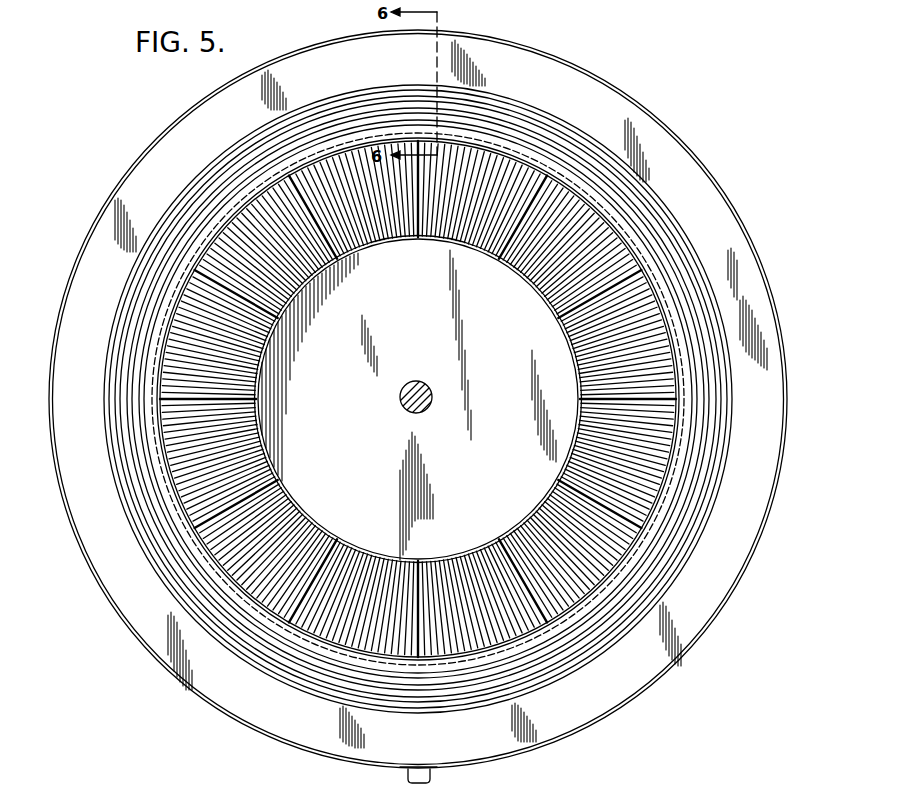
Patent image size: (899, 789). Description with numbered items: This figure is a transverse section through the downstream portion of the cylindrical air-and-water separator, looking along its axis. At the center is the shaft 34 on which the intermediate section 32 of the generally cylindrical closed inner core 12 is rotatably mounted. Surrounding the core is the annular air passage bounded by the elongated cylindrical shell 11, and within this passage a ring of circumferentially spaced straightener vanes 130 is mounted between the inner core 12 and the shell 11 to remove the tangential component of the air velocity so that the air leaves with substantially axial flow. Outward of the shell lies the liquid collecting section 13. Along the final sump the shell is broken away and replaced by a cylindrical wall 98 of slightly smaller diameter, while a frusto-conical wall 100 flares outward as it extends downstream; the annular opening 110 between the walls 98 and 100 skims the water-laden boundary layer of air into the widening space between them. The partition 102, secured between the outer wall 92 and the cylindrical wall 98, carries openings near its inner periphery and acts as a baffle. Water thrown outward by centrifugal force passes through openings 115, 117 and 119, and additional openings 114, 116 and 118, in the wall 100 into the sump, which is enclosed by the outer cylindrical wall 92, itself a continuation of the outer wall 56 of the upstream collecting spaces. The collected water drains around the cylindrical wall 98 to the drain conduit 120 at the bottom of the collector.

The cylindrical shell 11 is at (150, 330).
The inner core 12 is at (455, 238).
The liquid collecting section 13 is at (676, 141).
The intermediate section of the inner core 32 is at (462, 556).
The shaft 34 is at (418, 384).
The outer wall of collecting spaces 56 is at (542, 54).
The outer cylindrical wall 92 is at (160, 138).
The cylindrical wall 98 is at (255, 600).
The frusto-conical wall 100 is at (130, 518).
The partition 102 is at (751, 553).
The annular opening 110 is at (303, 157).
The opening in wall 114 is at (668, 290).
The opening in wall 115 is at (190, 566).
The opening in wall 116 is at (620, 612).
The opening in wall 117 is at (656, 232).
The opening in wall 118 is at (315, 695).
The opening in wall 119 is at (183, 189).
The drain conduit 120 is at (433, 776).
The straightener vanes 130 is at (345, 567).